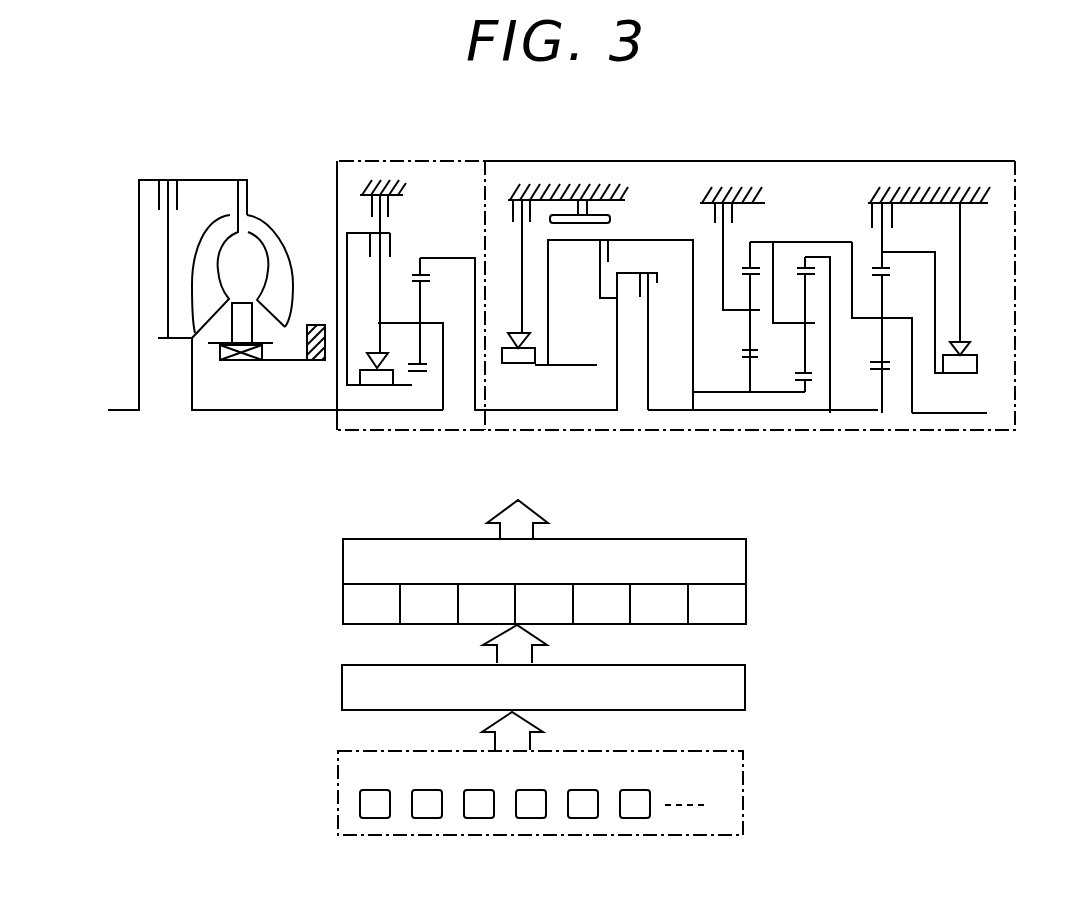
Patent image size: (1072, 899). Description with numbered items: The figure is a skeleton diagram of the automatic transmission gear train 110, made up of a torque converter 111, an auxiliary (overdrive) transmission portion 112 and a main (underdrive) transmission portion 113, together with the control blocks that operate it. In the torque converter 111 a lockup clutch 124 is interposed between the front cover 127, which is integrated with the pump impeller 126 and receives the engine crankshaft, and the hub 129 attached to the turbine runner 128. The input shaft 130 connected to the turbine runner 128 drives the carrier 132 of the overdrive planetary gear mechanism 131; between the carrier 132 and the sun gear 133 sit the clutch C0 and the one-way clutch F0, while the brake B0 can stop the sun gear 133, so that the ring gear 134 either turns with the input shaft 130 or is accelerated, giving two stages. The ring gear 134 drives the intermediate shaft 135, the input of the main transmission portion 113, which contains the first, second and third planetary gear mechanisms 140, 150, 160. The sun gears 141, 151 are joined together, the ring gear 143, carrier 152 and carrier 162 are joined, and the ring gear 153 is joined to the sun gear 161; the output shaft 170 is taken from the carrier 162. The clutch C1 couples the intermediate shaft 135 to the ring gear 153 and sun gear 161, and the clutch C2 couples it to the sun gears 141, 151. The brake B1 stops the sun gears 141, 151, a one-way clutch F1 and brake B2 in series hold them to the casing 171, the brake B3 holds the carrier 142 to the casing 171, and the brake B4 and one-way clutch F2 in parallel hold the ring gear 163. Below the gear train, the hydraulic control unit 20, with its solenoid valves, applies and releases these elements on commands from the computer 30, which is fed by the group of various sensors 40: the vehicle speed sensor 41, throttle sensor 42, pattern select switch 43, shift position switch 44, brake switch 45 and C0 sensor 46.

The torque converter 111 is at (265, 173).
The lockup clutch 124 is at (172, 183).
The pump impeller 126 is at (280, 236).
The front cover 127 is at (139, 233).
The turbine runner 128 is at (223, 213).
The hub 129 is at (173, 343).
The input shaft 130 is at (247, 410).
The auxiliary transmission portion 112 is at (458, 430).
The brake B0 is at (367, 198).
The clutch C0 is at (367, 232).
The one-way clutch F0 is at (370, 387).
The overdrive planetary gear mechanism 131 is at (403, 393).
The carrier 132 is at (435, 323).
The sun gear 133 is at (420, 377).
The ring gear 134 is at (417, 270).
The automatic transmission gear train 110 is at (655, 155).
The main transmission portion 113 is at (825, 162).
The casing 171 is at (560, 182).
The brake B1 is at (605, 195).
The brake B2 is at (508, 205).
The brake B3 is at (708, 215).
The brake B4 is at (880, 197).
The clutch C1 is at (658, 283).
The clutch C2 is at (590, 255).
The one-way clutch F1 is at (518, 363).
The one-way clutch F2 is at (977, 363).
The intermediate shaft 135 is at (568, 413).
The first planetary gear mechanism 140 is at (738, 398).
The sun gear 141 is at (727, 370).
The carrier 142 is at (732, 313).
The ring gear 143 is at (752, 262).
The second planetary gear mechanism 150 is at (805, 398).
The sun gear 151 is at (797, 372).
The carrier 152 is at (790, 322).
The ring gear 153 is at (797, 240).
The third planetary gear mechanism 160 is at (890, 412).
The sun gear 161 is at (870, 380).
The carrier 162 is at (902, 312).
The ring gear 163 is at (877, 267).
The output shaft 170 is at (965, 415).
The hydraulic control unit 20 is at (748, 563).
The computer 30 is at (745, 687).
The various sensors 40 is at (743, 778).
The vehicle speed sensor 41 is at (377, 818).
The throttle sensor 42 is at (429, 818).
The pattern select switch 43 is at (481, 818).
The shift position switch 44 is at (533, 818).
The brake switch 45 is at (585, 818).
The C0 sensor 46 is at (637, 818).